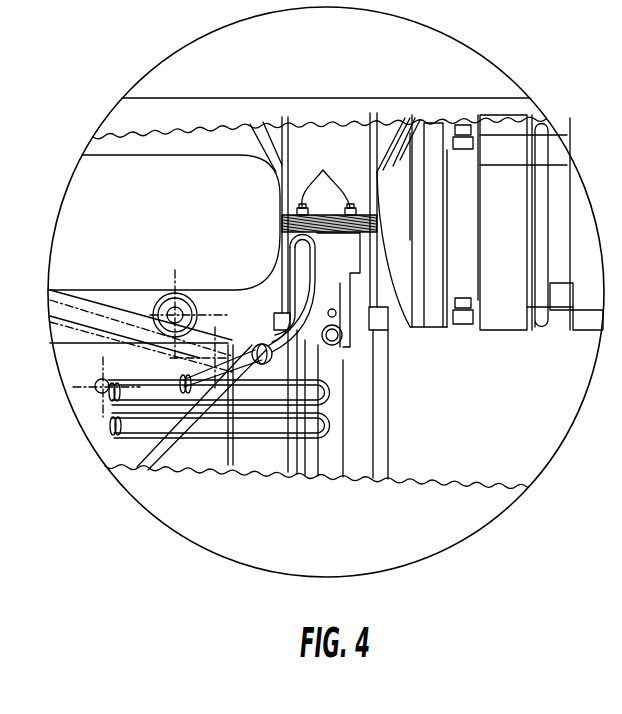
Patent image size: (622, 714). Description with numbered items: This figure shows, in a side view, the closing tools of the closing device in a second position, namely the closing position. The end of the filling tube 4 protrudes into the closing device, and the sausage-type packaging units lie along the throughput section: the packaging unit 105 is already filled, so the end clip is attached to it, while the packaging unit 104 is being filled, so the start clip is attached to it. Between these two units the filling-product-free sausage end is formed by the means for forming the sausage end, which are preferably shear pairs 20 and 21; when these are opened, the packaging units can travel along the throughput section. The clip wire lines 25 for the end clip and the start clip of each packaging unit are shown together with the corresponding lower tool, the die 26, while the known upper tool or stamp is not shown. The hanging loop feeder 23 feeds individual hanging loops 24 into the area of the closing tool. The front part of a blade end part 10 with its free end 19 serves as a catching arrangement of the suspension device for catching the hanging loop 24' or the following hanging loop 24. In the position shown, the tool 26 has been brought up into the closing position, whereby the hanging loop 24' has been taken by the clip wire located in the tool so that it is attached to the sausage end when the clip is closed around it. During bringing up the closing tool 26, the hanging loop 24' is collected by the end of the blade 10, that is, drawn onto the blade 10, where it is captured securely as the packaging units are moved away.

The filling tube 4 is at (587, 311).
The blade end part 10 is at (215, 322).
The free end 19 is at (228, 340).
The shear pair 20 is at (257, 124).
The shear pair 21 is at (352, 118).
The hanging loop feeder 23 is at (265, 450).
The hanging loop 24 is at (248, 403).
The hanging loop 24' is at (317, 317).
The clip wire line 25 is at (329, 187).
The die 26 is at (345, 264).
The packaging unit 104 is at (400, 263).
The packaging unit 105 is at (208, 226).